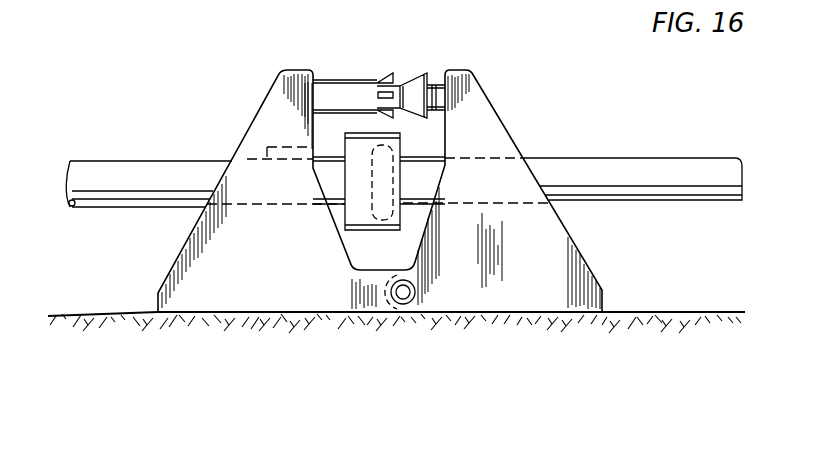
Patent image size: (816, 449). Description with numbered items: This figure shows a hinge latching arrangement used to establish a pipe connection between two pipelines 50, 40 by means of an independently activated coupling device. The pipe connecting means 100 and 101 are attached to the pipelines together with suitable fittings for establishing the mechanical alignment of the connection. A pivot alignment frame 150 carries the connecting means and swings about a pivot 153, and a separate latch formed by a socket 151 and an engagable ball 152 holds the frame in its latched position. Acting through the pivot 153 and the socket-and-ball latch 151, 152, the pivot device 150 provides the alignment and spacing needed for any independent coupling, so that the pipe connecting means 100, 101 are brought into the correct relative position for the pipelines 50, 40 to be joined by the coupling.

The right conduit 40 is at (658, 158).
The left conduit 50 is at (135, 160).
The pipe connecting means 100 is at (380, 212).
The pipe connecting means 101 is at (365, 133).
The pivot alignment frame 150 is at (270, 122).
The socket 151 is at (338, 87).
The engagable ball 152 is at (435, 82).
The pivot 153 is at (407, 313).